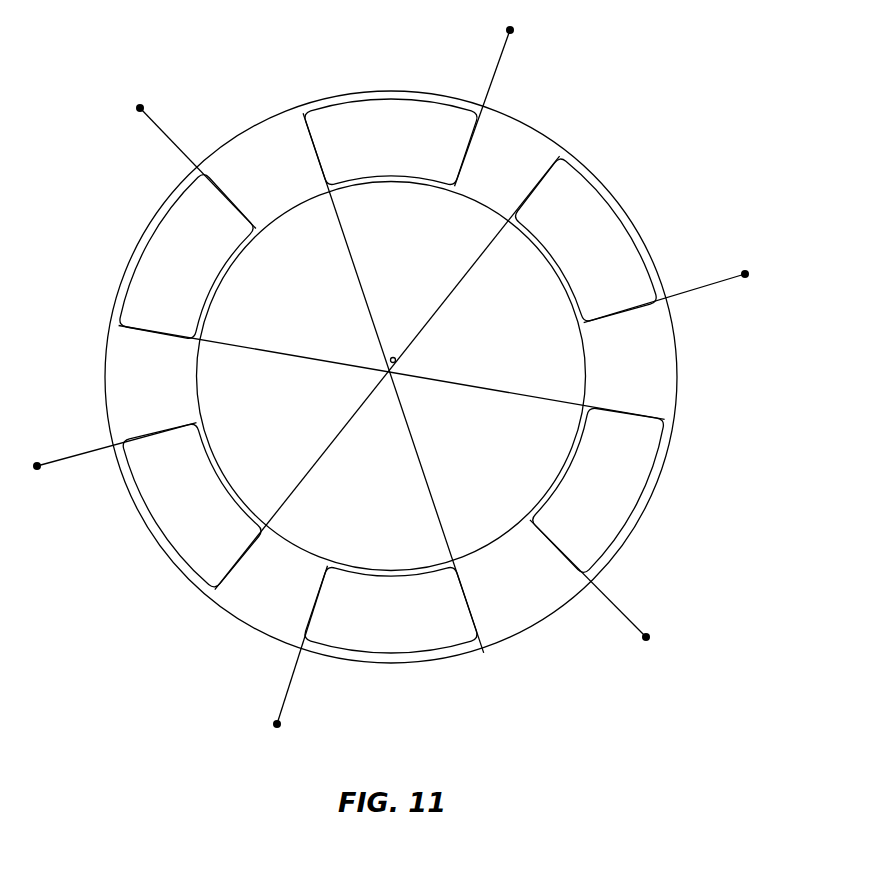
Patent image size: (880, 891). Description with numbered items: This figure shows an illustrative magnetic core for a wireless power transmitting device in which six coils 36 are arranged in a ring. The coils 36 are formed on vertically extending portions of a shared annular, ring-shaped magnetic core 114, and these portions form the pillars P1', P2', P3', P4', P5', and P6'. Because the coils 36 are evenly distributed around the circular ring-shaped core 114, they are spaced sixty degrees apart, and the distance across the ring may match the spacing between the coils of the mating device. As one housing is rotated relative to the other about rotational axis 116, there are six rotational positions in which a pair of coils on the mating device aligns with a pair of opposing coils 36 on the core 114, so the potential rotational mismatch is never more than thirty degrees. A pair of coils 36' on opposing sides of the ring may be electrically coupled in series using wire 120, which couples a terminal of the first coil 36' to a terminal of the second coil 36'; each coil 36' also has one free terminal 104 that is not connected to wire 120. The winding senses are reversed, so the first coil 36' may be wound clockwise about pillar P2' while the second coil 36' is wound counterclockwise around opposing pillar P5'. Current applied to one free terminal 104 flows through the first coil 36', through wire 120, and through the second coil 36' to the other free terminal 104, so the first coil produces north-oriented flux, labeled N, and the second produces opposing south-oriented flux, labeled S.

The coil 36 is at (389, 419).
The coil 36' is at (391, 109).
The free terminal 104 is at (515, 30).
The magnetic core 114 is at (525, 150).
The rotational axis 116 is at (393, 358).
The wire 120 is at (355, 258).
The pillar P1' is at (135, 252).
The pillar P2' is at (417, 92).
The pillar P3' is at (642, 237).
The pillar P4' is at (662, 477).
The pillar P5' is at (391, 656).
The pillar P6' is at (148, 533).